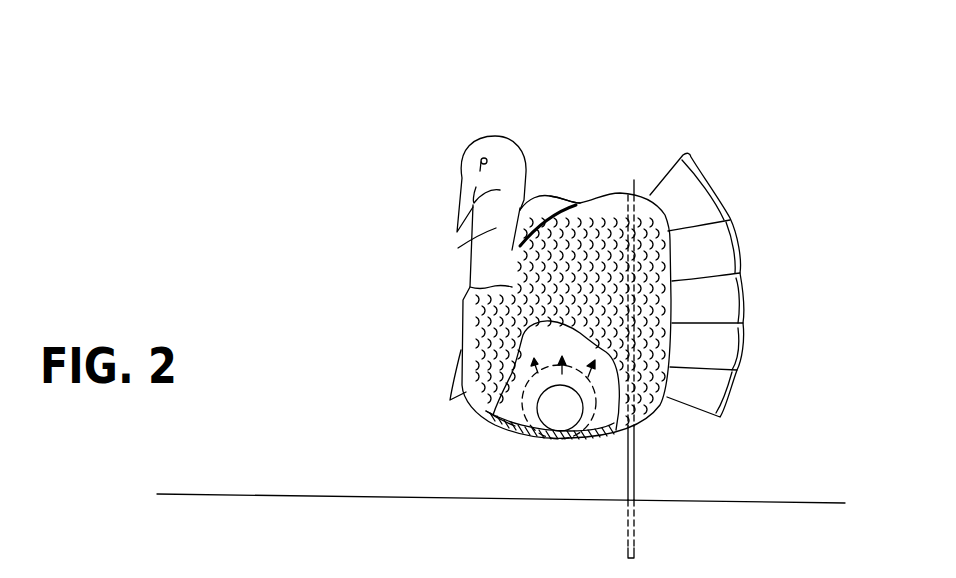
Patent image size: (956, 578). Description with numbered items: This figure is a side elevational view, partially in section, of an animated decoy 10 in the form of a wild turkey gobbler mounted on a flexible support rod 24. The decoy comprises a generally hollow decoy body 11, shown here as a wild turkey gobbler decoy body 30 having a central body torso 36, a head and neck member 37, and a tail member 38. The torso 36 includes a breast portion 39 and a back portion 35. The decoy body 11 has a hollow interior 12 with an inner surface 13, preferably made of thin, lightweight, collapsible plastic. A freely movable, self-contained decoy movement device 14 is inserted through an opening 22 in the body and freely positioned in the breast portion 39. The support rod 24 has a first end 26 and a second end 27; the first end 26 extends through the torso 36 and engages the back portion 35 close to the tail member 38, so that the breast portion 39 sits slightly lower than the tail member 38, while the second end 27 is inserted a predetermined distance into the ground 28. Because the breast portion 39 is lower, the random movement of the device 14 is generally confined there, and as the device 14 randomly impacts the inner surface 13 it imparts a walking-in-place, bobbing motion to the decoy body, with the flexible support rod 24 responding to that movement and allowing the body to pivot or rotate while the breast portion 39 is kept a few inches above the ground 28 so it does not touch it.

The animated decoy 10 is at (391, 196).
The decoy body 11 is at (478, 303).
The hollow interior 12 is at (502, 430).
The inner surface 13 is at (603, 425).
The decoy movement device 14 is at (557, 413).
The opening 22 is at (540, 196).
The support rod 24 is at (628, 472).
The first end 26 is at (622, 192).
The second end 27 is at (632, 543).
The ground 28 is at (763, 502).
The wild turkey gobbler decoy body 30 is at (485, 330).
The back portion 35 is at (590, 193).
The central body torso 36 is at (653, 270).
The head and neck member 37 is at (484, 243).
The tail member 38 is at (713, 310).
The breast portion 39 is at (515, 433).